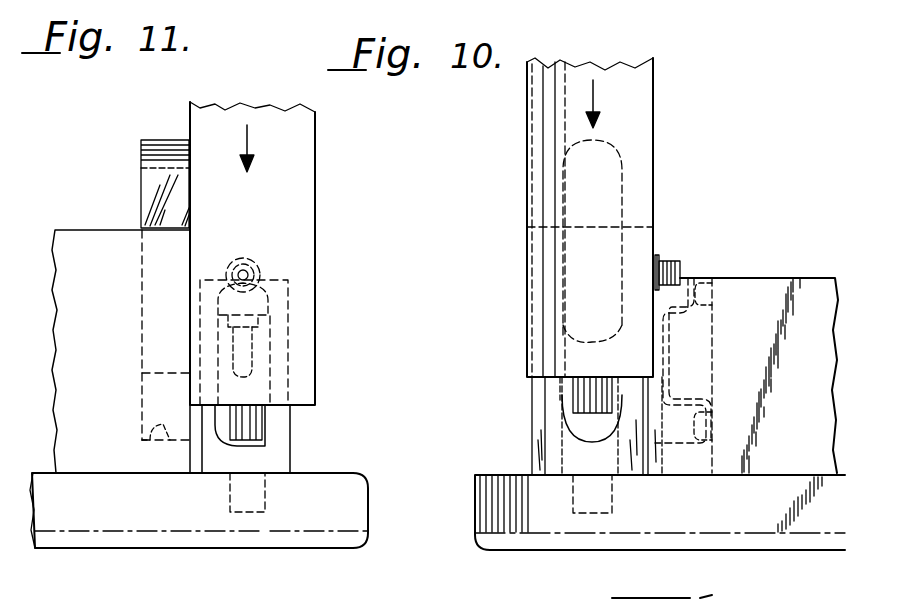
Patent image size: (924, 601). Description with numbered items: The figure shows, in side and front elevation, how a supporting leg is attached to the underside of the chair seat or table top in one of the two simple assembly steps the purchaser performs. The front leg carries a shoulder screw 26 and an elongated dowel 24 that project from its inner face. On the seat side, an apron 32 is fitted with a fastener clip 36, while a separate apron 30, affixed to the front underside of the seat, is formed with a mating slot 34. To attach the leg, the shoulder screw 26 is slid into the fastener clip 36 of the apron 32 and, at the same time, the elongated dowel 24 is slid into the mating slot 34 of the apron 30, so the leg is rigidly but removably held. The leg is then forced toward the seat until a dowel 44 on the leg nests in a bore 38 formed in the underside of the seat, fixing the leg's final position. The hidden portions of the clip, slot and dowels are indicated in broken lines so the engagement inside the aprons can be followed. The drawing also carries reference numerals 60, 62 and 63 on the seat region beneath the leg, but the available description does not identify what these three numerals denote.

In FIG. 11, the elongated dowel 24 is at (160, 165).
In FIG. 10, the elongated dowel 24 is at (590, 168).
In FIG. 11, the shoulder screw 26 is at (262, 273).
In FIG. 10, the shoulder screw 26 is at (672, 258).
In FIG. 11, the apron 30 is at (240, 439).
In FIG. 10, the apron 30 is at (548, 398).
In FIG. 10, the apron 32 is at (803, 300).
In FIG. 11, the mating slot 34 is at (165, 440).
In FIG. 10, the mating slot 34 is at (566, 422).
In FIG. 11, the fastener clip 36 is at (258, 352).
In FIG. 10, the fastener clip 36 is at (700, 277).
In FIG. 11, the bore 38 is at (265, 492).
In FIG. 10, the bore 38 is at (573, 500).
In FIG. 11, the dowel 44 is at (265, 426).
In FIG. 10, the dowel 44 is at (512, 392).
In FIG. 11, the base assembly 60 is at (385, 600).
In FIG. 11, the base 62 is at (199, 537).
In FIG. 10, the base 62 is at (660, 512).
In FIG. 11, the base portion 63 is at (53, 589).